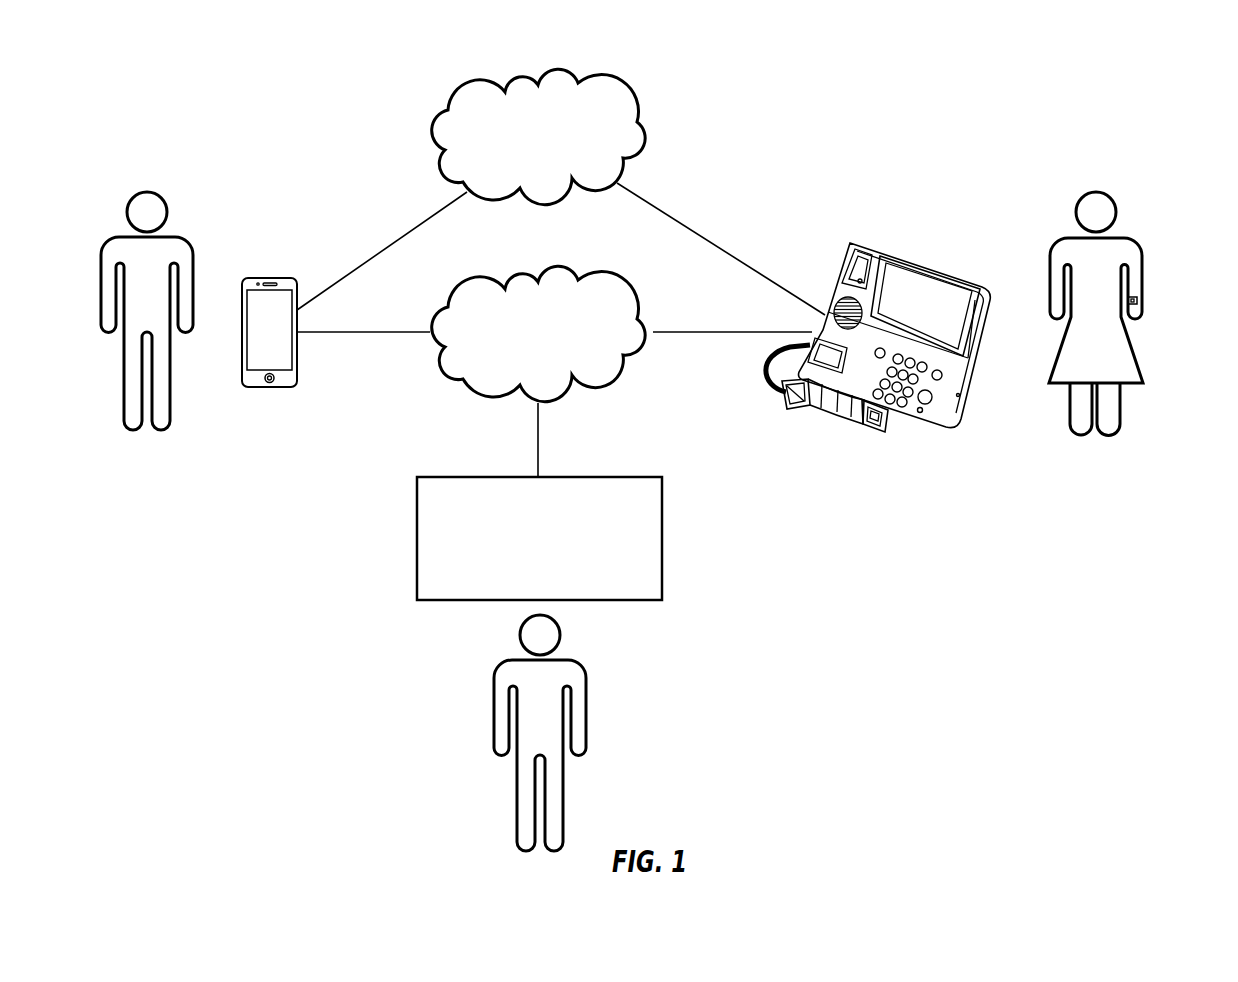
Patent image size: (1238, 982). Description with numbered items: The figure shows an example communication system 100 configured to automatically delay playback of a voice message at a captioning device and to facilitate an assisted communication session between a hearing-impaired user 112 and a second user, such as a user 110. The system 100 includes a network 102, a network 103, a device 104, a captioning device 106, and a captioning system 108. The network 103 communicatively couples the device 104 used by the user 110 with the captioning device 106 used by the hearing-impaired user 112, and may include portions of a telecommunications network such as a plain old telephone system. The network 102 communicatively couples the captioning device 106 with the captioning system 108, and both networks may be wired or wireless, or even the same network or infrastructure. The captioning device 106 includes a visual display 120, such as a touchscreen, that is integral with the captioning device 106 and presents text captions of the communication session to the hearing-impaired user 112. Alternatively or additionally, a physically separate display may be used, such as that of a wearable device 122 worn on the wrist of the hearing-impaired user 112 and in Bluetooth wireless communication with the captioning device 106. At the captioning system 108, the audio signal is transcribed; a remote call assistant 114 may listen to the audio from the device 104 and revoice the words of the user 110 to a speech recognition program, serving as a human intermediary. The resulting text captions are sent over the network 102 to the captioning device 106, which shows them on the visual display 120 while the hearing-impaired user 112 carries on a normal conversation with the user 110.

The communication system 100 is at (975, 104).
The network 102 is at (524, 355).
The network 103 is at (524, 158).
The device 104 is at (260, 278).
The captioning device 106 is at (838, 262).
The captioning system 108 is at (525, 562).
The user 110 is at (165, 197).
The hearing-impaired user 112 is at (1113, 201).
The remote call assistant 114 is at (492, 715).
The visual display 120 is at (918, 285).
The wearable device 122 is at (1138, 300).